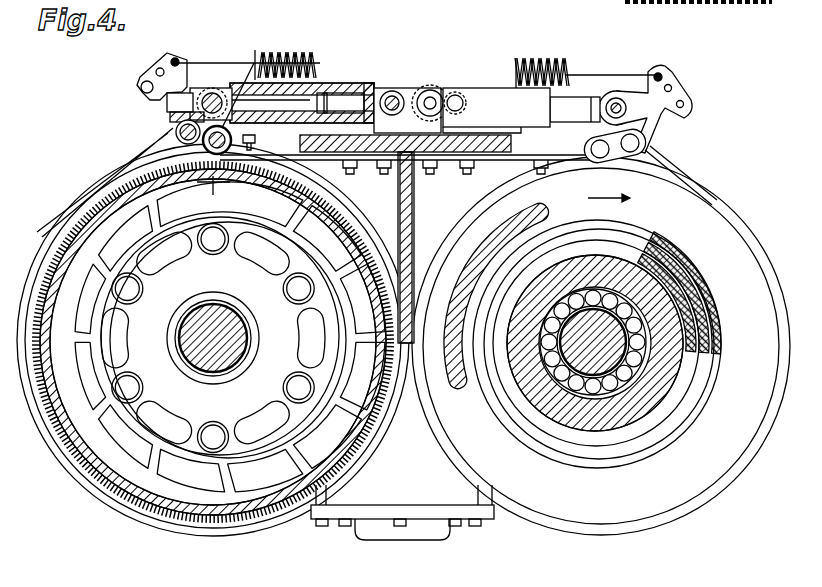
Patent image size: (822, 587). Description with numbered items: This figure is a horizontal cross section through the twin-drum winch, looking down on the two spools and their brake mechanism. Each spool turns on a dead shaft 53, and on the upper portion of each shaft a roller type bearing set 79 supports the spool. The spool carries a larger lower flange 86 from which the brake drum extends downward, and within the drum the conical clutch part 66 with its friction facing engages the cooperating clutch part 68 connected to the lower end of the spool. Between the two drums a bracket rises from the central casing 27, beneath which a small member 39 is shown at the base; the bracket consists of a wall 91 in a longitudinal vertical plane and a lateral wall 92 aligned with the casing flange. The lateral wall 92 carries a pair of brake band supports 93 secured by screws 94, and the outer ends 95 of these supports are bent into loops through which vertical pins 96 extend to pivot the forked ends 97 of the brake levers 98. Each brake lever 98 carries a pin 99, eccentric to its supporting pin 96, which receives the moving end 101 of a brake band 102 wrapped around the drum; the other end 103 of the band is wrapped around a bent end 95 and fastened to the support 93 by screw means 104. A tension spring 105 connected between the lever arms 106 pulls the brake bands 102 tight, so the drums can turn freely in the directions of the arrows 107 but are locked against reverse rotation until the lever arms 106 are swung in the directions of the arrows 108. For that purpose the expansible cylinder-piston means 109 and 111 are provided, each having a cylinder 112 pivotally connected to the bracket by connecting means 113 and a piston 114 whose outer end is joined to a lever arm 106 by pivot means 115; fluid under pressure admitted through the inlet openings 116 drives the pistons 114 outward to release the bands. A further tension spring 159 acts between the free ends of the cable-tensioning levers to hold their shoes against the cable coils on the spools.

The central casing 27 is at (362, 489).
The bracket 39 is at (414, 532).
The dead shaft 53 is at (213, 346).
The clutch part 66 is at (100, 469).
The cooperating clutch part 68 is at (97, 412).
The roller type bearing set 79 is at (645, 385).
The lower flange 86 is at (620, 492).
The wall 91 is at (414, 204).
The lateral wall 92 is at (393, 168).
The brake band support 93 is at (325, 158).
The screws 94 is at (437, 166).
The outer end 95 is at (187, 172).
The vertical pin 96 is at (302, 103).
The forked end 97 is at (172, 117).
The brake lever 98 is at (170, 102).
The pin 99 is at (193, 97).
The moving end 101 is at (178, 133).
The brake band 102 is at (85, 195).
The other end 103 is at (266, 76).
The screw means 104 is at (258, 141).
The tension spring 105 is at (556, 60).
The lever arm 106 is at (142, 76).
The arrows 107 is at (232, 186).
The arrows 108 is at (180, 38).
The expansible cylinder-piston means 109 is at (355, 88).
The expansible cylinder-piston means 111 is at (508, 102).
The cylinder 112 is at (298, 58).
The means for connecting pivotally 113 is at (398, 98).
The piston 114 is at (302, 92).
The pivot means 115 is at (616, 98).
The inlet opening 116 is at (461, 96).
The tension spring 159 is at (497, 580).